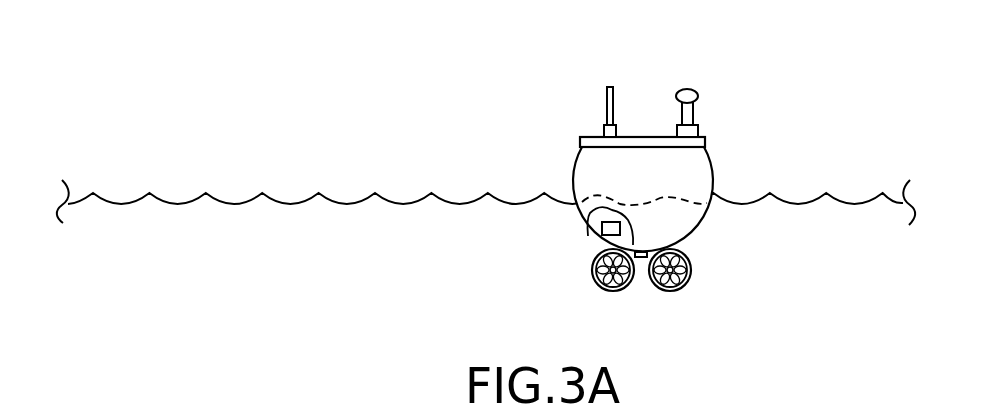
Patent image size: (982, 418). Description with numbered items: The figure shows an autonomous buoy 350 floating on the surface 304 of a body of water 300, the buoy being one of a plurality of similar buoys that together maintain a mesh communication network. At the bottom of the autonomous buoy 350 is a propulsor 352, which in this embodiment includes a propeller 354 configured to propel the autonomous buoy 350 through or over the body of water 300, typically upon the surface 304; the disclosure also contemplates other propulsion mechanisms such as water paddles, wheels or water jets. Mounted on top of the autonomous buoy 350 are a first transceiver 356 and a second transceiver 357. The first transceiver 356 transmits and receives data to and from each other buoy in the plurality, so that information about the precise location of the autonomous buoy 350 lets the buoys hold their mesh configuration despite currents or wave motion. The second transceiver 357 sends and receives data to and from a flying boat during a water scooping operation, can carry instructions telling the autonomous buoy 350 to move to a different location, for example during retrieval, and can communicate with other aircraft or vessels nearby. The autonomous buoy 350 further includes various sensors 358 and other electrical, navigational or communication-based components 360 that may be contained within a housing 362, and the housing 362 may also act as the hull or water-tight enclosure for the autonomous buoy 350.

The body of water 300 is at (193, 251).
The surface 304 is at (175, 203).
The autonomous buoy 350 is at (512, 125).
The propulsor 352 is at (692, 265).
The propeller 354 is at (659, 272).
The first transceiver 356 is at (613, 107).
The second transceiver 357 is at (693, 91).
The sensors 358 is at (597, 238).
The electrical, navigational or communication-based components 360 is at (600, 227).
The housing 362 is at (683, 220).